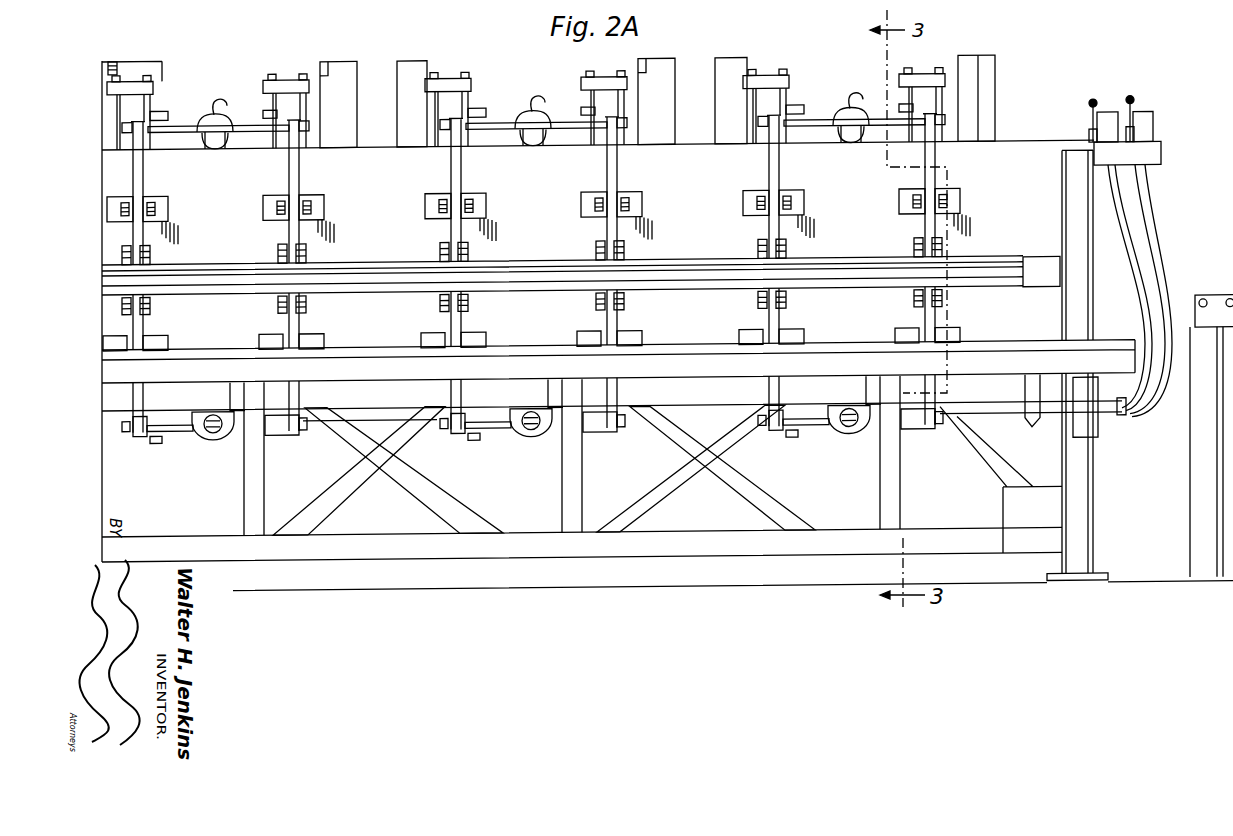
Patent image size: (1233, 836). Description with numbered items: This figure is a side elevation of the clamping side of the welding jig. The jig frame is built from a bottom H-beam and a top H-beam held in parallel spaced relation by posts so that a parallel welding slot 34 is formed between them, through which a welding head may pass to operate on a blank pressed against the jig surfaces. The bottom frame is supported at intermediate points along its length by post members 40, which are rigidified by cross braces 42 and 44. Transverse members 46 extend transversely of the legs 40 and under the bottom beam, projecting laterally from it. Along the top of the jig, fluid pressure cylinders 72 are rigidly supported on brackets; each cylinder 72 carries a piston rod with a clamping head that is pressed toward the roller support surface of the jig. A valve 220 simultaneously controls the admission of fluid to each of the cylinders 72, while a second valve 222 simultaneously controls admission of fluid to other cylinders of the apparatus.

The welding slot 34 is at (842, 270).
The post member 40 is at (582, 462).
The cross brace 42 is at (668, 502).
The cross brace 44 is at (770, 497).
The transverse member 46 is at (877, 430).
The fluid pressure cylinder 72 is at (770, 100).
The valve 220 is at (1155, 123).
The valve 222 is at (1092, 122).